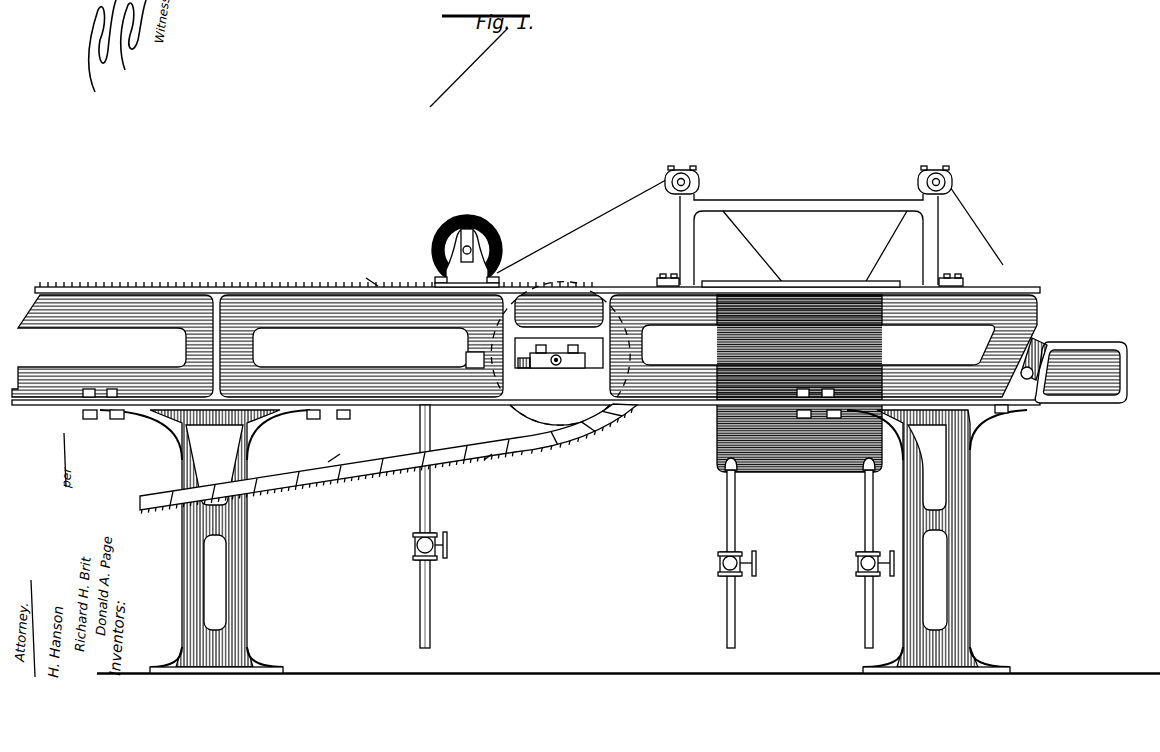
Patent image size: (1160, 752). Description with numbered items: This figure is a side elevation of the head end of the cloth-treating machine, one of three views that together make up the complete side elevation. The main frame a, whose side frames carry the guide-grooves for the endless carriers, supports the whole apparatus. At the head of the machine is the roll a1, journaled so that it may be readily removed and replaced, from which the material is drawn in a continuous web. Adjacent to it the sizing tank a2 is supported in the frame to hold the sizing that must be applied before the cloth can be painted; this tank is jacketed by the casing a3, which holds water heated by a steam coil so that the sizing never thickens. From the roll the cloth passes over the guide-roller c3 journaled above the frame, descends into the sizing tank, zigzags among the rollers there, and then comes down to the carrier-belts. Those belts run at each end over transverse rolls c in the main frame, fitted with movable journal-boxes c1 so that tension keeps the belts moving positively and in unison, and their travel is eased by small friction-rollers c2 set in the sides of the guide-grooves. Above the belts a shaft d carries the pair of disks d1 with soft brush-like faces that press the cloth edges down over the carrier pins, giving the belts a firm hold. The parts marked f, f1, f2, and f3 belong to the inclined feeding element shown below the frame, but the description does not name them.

The main frame a is at (526, 351).
The roll a1 is at (1074, 381).
The sizing tank a2 is at (430, 526).
The casing a3 is at (787, 383).
The transverse rolls c is at (560, 354).
The movable journal-boxes c1 is at (559, 362).
The friction-rollers c2 is at (670, 178).
The guide-roller c3 is at (935, 174).
The shaft d is at (459, 250).
The disks d1 is at (477, 255).
The feed belt f is at (400, 446).
The rack rail f1 is at (365, 276).
The belt link f2 is at (326, 463).
The belt link f3 is at (481, 463).